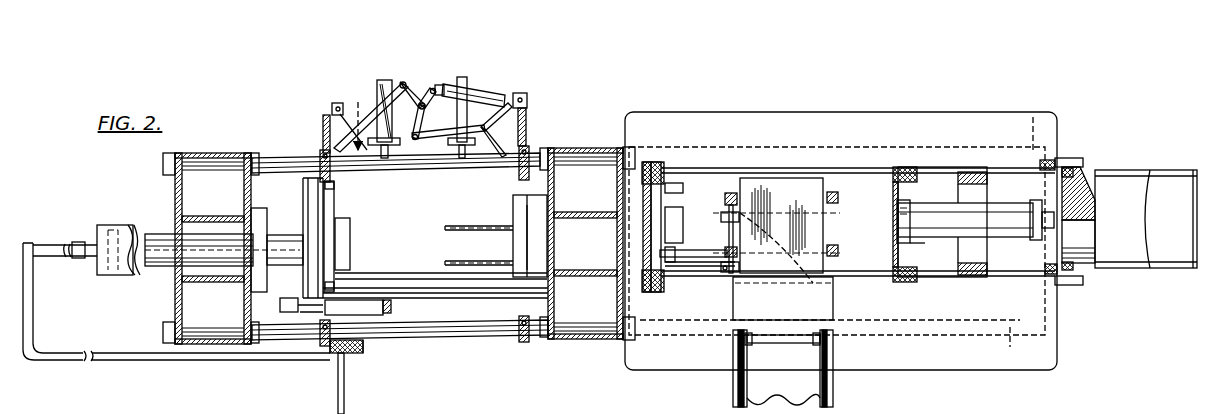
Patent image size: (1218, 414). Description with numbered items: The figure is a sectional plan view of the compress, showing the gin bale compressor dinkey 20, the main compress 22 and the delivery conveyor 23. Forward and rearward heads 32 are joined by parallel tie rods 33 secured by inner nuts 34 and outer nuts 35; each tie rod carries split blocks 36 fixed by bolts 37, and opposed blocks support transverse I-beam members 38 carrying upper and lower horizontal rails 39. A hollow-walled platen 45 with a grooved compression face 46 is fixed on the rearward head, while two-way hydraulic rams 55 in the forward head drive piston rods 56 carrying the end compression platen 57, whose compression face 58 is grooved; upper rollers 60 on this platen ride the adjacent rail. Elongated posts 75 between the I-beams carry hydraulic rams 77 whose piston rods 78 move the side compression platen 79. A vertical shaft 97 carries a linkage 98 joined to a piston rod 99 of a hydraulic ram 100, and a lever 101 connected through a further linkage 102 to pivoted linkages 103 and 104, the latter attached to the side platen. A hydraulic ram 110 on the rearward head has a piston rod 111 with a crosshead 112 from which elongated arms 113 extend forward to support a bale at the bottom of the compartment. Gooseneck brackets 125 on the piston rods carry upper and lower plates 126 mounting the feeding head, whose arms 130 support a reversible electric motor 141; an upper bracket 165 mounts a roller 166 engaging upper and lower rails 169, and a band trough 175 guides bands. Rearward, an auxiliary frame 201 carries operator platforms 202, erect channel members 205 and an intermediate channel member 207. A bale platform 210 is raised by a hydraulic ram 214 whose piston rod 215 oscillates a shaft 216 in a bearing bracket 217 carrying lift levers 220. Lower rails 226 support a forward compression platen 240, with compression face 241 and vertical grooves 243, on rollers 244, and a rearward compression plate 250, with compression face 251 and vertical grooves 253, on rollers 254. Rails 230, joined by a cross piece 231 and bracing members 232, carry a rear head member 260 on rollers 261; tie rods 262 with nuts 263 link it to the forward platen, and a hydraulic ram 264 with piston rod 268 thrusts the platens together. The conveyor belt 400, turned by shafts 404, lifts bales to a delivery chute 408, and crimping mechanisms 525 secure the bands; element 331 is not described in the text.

The gin bale compressor dinkey 20 is at (765, 155).
The main compress 22 is at (525, 280).
The delivery conveyor 23 is at (838, 390).
The heads 32 is at (213, 153).
The tie rods 33 is at (474, 168).
The inner nuts 34 is at (255, 152).
The outer nuts 35 is at (163, 160).
The split blocks 36 is at (333, 183).
The bolts 37 is at (320, 161).
The I-beam members 38 is at (519, 183).
The horizontal rails 39 is at (400, 178).
The platen 45 is at (508, 254).
The compression face 46 is at (515, 237).
The two-way hydraulic rams 55 is at (163, 232).
The piston rods 56 is at (135, 232).
The end compression platen 57 is at (350, 249).
The compression face 58 is at (350, 229).
The upper rollers 60 is at (325, 185).
The elongated posts 75 is at (322, 150).
The hydraulic rams 77 is at (380, 82).
The piston rods 78 is at (382, 147).
The side compression platen 79 is at (352, 117).
The vertical shaft 97 is at (403, 80).
The linkage 98 is at (422, 100).
The piston rod 99 is at (434, 87).
The hydraulic ram 100 is at (480, 92).
The lever 101 is at (420, 100).
The linkage 102 is at (415, 142).
The pivoted linkage 103 is at (327, 120).
The pivoted linkage 104 is at (336, 150).
The hydraulic ram 110 is at (722, 240).
The piston rod 111 is at (845, 262).
The crosshead 112 is at (868, 266).
The elongated arms 113 is at (445, 262).
The gooseneck brackets 125 is at (130, 361).
The upper and lower plates 126 is at (385, 336).
The arms 130 is at (306, 300).
The reversible electric motor 141 is at (280, 304).
The upper bracket 165 is at (355, 353).
The roller 166 is at (335, 353).
The upper and lower rails 169 is at (465, 337).
The band trough 175 is at (338, 398).
The auxiliary frame 201 is at (837, 238).
The operator platforms 202 is at (905, 112).
The erect channel members 205 is at (972, 172).
The intermediate channel member 207 is at (985, 250).
The bale platform 210 is at (790, 178).
The hydraulic ram 214 is at (692, 258).
The piston rod 215 is at (728, 278).
The shaft 216 is at (722, 268).
The bearing bracket 217 is at (740, 223).
The lift levers 220 is at (812, 284).
The lower rails 226 is at (835, 168).
The rails 230 is at (1146, 219).
The cross piece 231 is at (1195, 210).
The bracing members 232 is at (832, 192).
The forward compression platen 240 is at (645, 195).
The compression face 241 is at (682, 186).
The vertical grooves 243 is at (665, 222).
The upper and lower rollers 244 is at (623, 172).
The rearward compression plate 250 is at (910, 202).
The compression face 251 is at (918, 244).
The vertical grooves 253 is at (895, 185).
The upper and lower rollers 254 is at (915, 167).
The rear head member 260 is at (1095, 197).
The rollers 261 is at (1093, 170).
The tie rods 262 is at (965, 167).
The nuts 263 is at (650, 162).
The hydraulic ram 264 is at (990, 218).
The piston rod 268 is at (1070, 242).
The bearing 331 is at (731, 193).
The conveyor belt 400 is at (783, 404).
The shafts 404 is at (783, 344).
The delivery chute 408 is at (783, 298).
The crimping mechanisms 525 is at (392, 307).